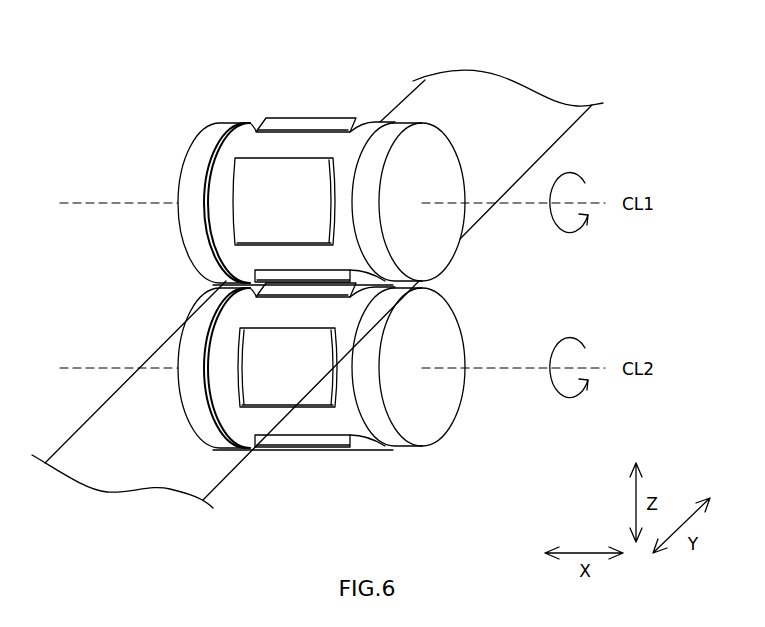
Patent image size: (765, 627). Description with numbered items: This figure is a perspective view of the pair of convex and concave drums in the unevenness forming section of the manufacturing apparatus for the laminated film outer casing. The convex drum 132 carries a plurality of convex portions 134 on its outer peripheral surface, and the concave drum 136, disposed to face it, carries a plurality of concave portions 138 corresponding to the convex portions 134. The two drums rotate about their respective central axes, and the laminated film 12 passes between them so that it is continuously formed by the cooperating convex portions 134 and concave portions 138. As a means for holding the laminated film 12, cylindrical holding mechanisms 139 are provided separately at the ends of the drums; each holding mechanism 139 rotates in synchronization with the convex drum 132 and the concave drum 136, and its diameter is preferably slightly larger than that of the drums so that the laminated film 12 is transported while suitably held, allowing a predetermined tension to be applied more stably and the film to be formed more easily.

The laminated film 12 is at (225, 473).
The convex drum 132 is at (233, 162).
The convex portions 134 is at (243, 216).
The concave drum 136 is at (238, 400).
The concave portions 138 is at (250, 360).
The holding mechanism 139 is at (207, 130).